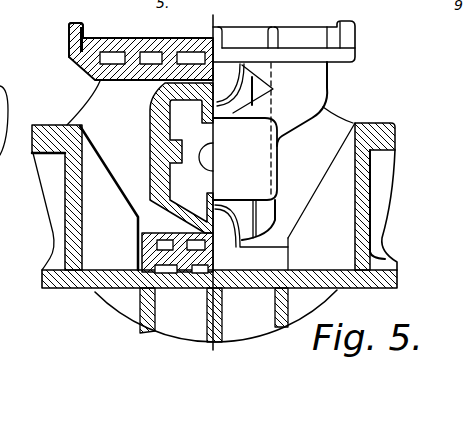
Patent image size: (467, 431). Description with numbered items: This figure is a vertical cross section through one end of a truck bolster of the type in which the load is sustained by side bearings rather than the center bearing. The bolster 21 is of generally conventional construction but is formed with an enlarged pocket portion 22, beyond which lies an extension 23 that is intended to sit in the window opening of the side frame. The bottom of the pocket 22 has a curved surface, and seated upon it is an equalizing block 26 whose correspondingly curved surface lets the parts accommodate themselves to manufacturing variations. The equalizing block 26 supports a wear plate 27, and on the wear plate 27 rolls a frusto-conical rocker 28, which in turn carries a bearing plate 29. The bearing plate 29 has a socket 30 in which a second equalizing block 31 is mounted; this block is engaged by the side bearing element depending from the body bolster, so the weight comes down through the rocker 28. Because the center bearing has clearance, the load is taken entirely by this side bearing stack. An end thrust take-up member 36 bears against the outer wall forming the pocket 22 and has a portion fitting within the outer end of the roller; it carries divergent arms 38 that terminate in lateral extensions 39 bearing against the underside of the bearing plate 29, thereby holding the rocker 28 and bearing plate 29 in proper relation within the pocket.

The bolster 21 is at (53, 233).
The enlarged pocket portion 22 is at (54, 255).
The extension 23 is at (389, 118).
The equalizing block 26 is at (185, 262).
The wear plate 27 is at (155, 269).
The frusto-conical rocker 28 is at (153, 141).
The bearing plate 29 is at (100, 83).
The socket 30 is at (84, 31).
The equalizing block 31 is at (197, 49).
The end thrust take-up member 36 is at (250, 182).
The divergent arms 38 is at (272, 129).
The lateral extensions 39 is at (283, 73).